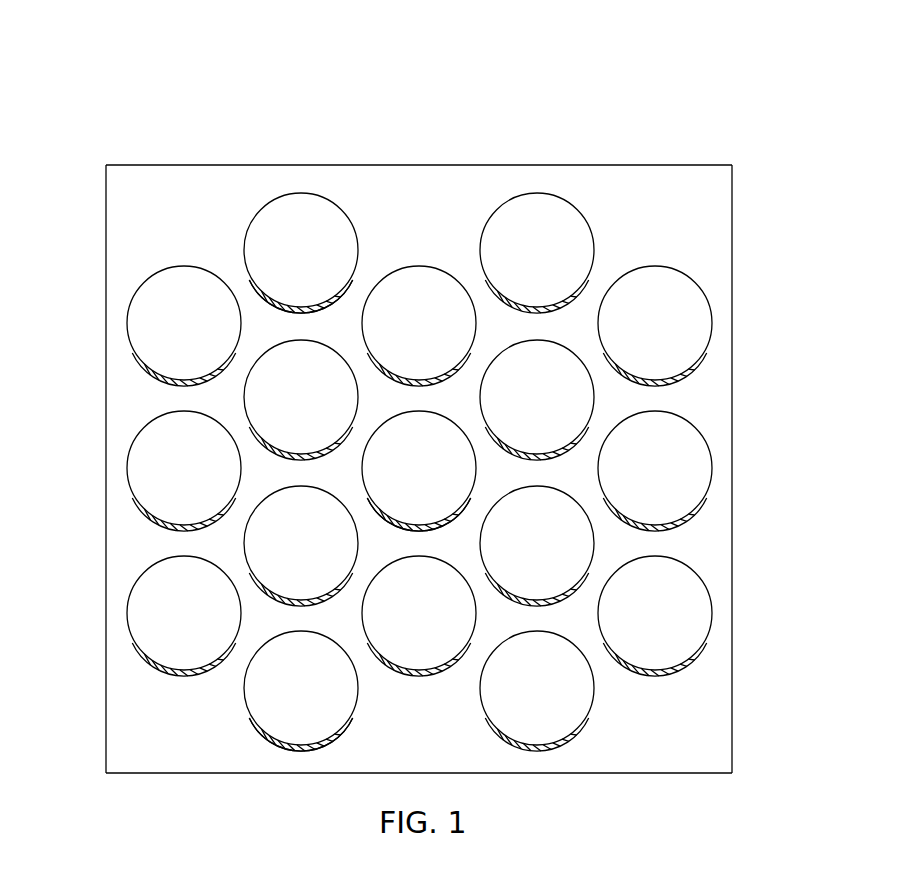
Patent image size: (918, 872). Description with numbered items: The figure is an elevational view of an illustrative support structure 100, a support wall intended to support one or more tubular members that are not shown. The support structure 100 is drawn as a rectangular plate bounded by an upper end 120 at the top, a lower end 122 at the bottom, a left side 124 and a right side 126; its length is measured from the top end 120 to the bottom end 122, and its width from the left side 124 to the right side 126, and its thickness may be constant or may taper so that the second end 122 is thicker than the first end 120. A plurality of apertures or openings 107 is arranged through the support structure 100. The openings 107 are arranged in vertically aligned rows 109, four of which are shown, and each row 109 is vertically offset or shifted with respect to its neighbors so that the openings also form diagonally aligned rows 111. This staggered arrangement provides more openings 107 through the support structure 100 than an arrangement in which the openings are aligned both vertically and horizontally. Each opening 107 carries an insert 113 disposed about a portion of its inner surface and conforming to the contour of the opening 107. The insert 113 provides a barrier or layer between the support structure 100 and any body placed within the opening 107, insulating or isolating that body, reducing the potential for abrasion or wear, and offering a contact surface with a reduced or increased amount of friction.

The support structure 100 is at (637, 73).
The openings 107 is at (293, 222).
The rows of vertically aligned openings 109 is at (536, 187).
The diagonally aligned rows 111 is at (143, 302).
The insert 113 is at (298, 307).
The upper end 120 is at (172, 163).
The lower end 122 is at (157, 775).
The left side 124 is at (106, 398).
The right side 126 is at (733, 390).